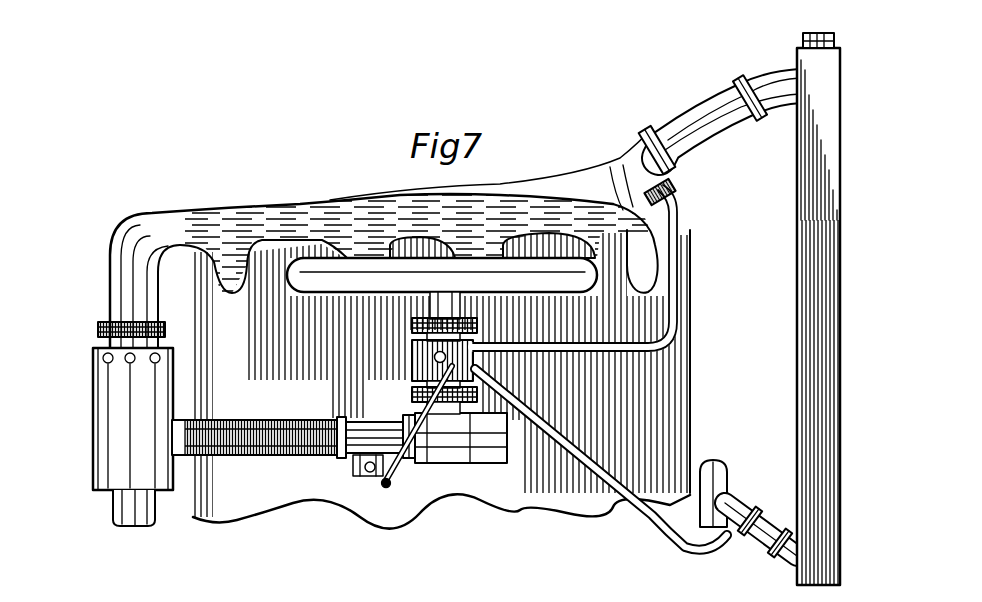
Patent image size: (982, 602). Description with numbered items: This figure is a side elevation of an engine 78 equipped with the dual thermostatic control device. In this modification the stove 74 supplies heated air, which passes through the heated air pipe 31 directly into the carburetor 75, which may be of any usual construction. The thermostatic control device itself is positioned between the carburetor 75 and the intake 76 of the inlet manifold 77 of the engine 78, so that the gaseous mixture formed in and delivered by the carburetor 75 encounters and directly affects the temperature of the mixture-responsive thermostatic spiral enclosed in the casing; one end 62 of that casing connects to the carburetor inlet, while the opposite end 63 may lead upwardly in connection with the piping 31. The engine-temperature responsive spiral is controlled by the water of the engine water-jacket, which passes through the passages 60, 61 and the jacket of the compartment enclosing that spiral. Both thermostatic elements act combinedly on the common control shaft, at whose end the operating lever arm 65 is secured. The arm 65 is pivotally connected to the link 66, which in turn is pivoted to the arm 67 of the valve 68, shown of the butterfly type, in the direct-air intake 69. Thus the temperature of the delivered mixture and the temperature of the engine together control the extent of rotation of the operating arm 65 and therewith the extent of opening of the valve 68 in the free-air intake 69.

The heated air pipe 31 is at (250, 420).
The water passage 60 is at (676, 206).
The water passage 61 is at (600, 482).
The casing end 62 is at (413, 326).
The casing end 63 is at (413, 396).
The operating lever arm 65 is at (434, 359).
The link 66 is at (408, 465).
The valve arm 67 is at (384, 481).
The valve 68 is at (364, 475).
The direct-air intake 69 is at (353, 463).
The stove 74 is at (120, 478).
The carburetor 75 is at (450, 443).
The intake 76 is at (442, 313).
The inlet manifold 77 is at (316, 276).
The engine 78 is at (667, 388).